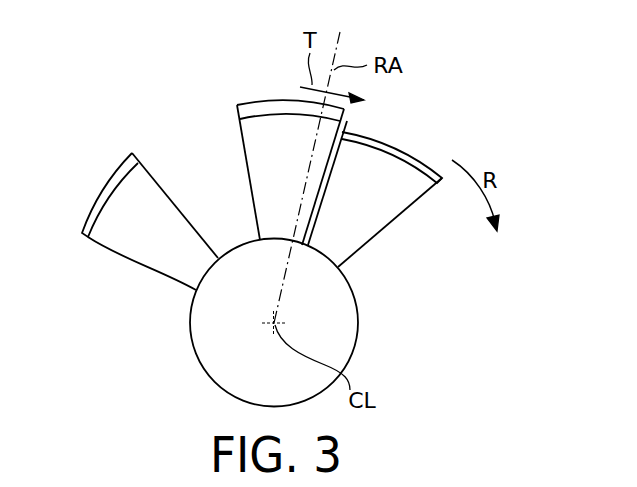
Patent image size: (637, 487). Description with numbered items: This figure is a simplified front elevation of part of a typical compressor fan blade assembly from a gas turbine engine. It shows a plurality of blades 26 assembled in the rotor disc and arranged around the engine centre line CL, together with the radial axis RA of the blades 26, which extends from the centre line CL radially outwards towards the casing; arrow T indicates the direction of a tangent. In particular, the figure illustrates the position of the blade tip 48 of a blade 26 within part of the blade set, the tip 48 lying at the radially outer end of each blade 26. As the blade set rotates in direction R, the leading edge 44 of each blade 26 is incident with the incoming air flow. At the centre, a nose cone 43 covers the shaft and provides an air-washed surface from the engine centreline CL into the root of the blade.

The blade 26 is at (262, 155).
The nose cone 43 is at (210, 333).
The leading edge 44 is at (170, 190).
The blade tip 48 is at (100, 183).